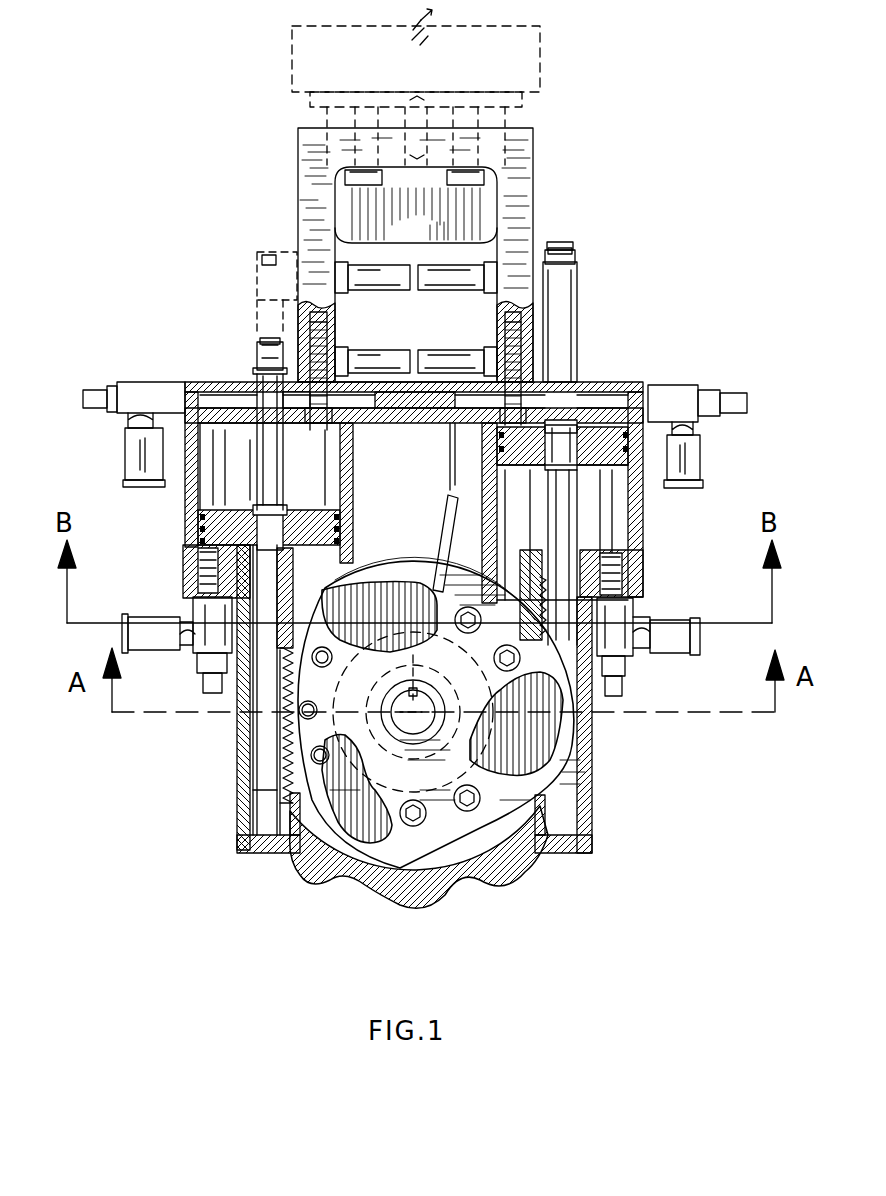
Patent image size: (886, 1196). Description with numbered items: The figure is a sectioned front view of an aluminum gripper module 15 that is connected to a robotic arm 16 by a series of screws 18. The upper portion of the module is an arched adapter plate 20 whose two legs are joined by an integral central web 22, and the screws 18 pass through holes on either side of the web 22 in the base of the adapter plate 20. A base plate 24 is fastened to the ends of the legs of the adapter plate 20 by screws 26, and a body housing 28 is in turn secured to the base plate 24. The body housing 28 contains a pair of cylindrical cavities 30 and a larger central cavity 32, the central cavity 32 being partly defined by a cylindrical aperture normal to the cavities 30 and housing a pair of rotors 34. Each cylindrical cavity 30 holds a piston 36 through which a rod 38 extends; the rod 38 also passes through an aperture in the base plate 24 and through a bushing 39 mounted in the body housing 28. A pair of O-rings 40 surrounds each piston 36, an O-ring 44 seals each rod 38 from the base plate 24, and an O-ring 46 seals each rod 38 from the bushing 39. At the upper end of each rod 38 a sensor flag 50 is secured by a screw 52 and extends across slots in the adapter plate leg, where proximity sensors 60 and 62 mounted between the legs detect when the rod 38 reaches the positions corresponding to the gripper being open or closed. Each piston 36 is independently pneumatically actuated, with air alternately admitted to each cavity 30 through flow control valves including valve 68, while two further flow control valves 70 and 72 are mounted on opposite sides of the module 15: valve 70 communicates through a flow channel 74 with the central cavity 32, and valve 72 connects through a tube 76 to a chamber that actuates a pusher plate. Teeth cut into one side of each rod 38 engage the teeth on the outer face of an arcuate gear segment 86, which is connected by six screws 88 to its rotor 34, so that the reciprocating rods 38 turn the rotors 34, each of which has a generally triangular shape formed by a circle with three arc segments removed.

The gripper module 15 is at (668, 250).
The robotic arm 16 is at (522, 52).
The screws 18 is at (345, 174).
The adapter plate 20 is at (536, 150).
The central web 22 is at (345, 207).
The base plate 24 is at (630, 380).
The screws 26 is at (318, 430).
The body housing 28 is at (636, 566).
The cylindrical cavities 30 is at (200, 508).
The central cavity 32 is at (433, 513).
The rotors 34 is at (393, 862).
The piston 36 is at (608, 445).
The rod 38 is at (262, 458).
The bushing 39 is at (595, 598).
The O-rings 40 is at (196, 566).
The O-ring 44 is at (577, 420).
The O-ring 46 is at (615, 578).
The sensor flag 50 is at (262, 358).
The screw 52 is at (265, 342).
The proximity sensor 60 is at (398, 282).
The proximity sensor 62 is at (355, 358).
The flow control valve 68 is at (140, 630).
The flow control valve 70 is at (145, 385).
The flow control valve 72 is at (690, 388).
The flow channel 74 is at (252, 398).
The tube 76 is at (440, 560).
The arcuate gear segment 86 is at (290, 742).
The screws 88 is at (300, 712).